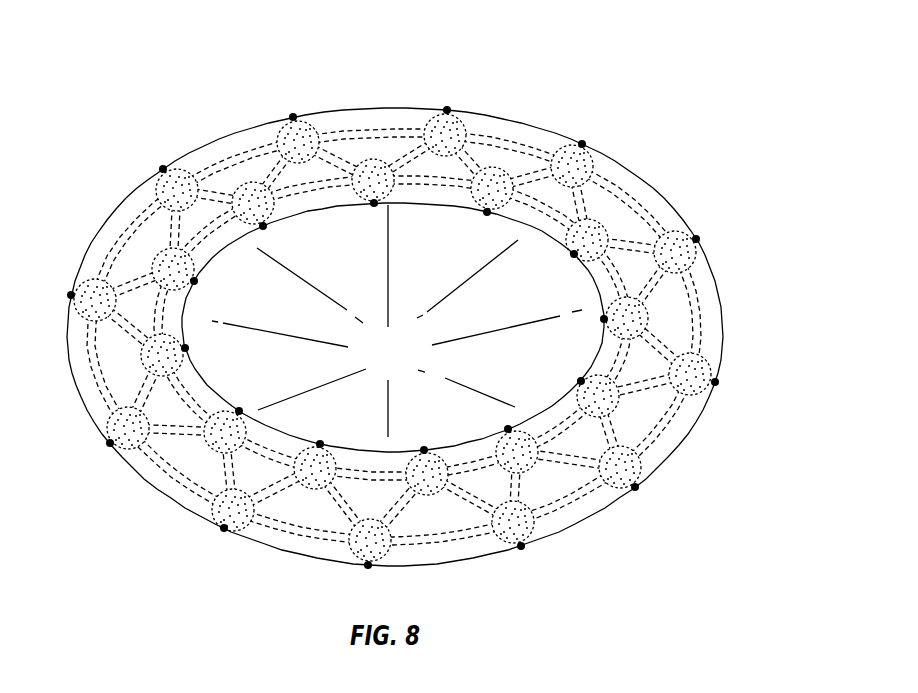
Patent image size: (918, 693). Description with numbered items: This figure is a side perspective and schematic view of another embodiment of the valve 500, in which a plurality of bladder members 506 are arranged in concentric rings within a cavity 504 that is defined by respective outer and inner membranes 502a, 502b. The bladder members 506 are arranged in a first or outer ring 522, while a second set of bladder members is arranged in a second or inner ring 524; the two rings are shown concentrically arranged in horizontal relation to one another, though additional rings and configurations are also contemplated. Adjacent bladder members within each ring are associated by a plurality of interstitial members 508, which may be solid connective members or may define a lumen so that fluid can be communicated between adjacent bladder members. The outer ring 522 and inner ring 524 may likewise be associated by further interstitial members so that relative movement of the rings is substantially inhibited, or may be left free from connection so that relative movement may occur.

The valve 500 is at (690, 88).
The outer membrane 502a is at (367, 108).
The inner membrane 502b is at (452, 204).
The cavity 504 is at (653, 468).
The bladder member 506 is at (683, 230).
The interstitial member 508 is at (697, 328).
The outer ring 522 is at (690, 282).
The inner ring 524 is at (627, 370).